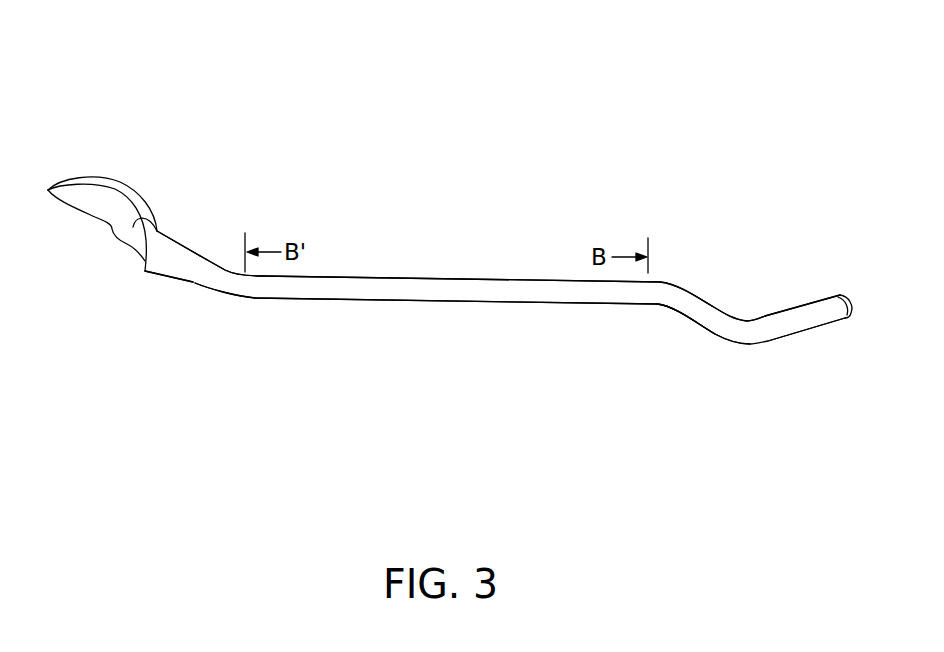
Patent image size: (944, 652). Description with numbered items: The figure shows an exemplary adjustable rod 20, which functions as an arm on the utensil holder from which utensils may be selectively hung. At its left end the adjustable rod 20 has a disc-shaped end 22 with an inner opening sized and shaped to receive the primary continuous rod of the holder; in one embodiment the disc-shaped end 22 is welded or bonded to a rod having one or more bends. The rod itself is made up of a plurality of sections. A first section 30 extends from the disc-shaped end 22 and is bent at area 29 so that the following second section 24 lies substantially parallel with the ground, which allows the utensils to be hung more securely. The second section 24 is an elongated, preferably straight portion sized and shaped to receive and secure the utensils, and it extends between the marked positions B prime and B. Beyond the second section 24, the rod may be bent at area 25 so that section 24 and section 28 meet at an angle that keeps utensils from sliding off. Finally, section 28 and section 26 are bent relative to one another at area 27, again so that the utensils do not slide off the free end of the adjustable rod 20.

The adjustable rod 20 is at (110, 70).
The disc-shaped end 22 is at (68, 200).
The second section 24 is at (412, 288).
The bend area 25 is at (648, 315).
The section 26 is at (854, 324).
The bend area 27 is at (752, 312).
The section 28 is at (743, 353).
The bend area 29 is at (233, 258).
The first section 30 is at (228, 312).